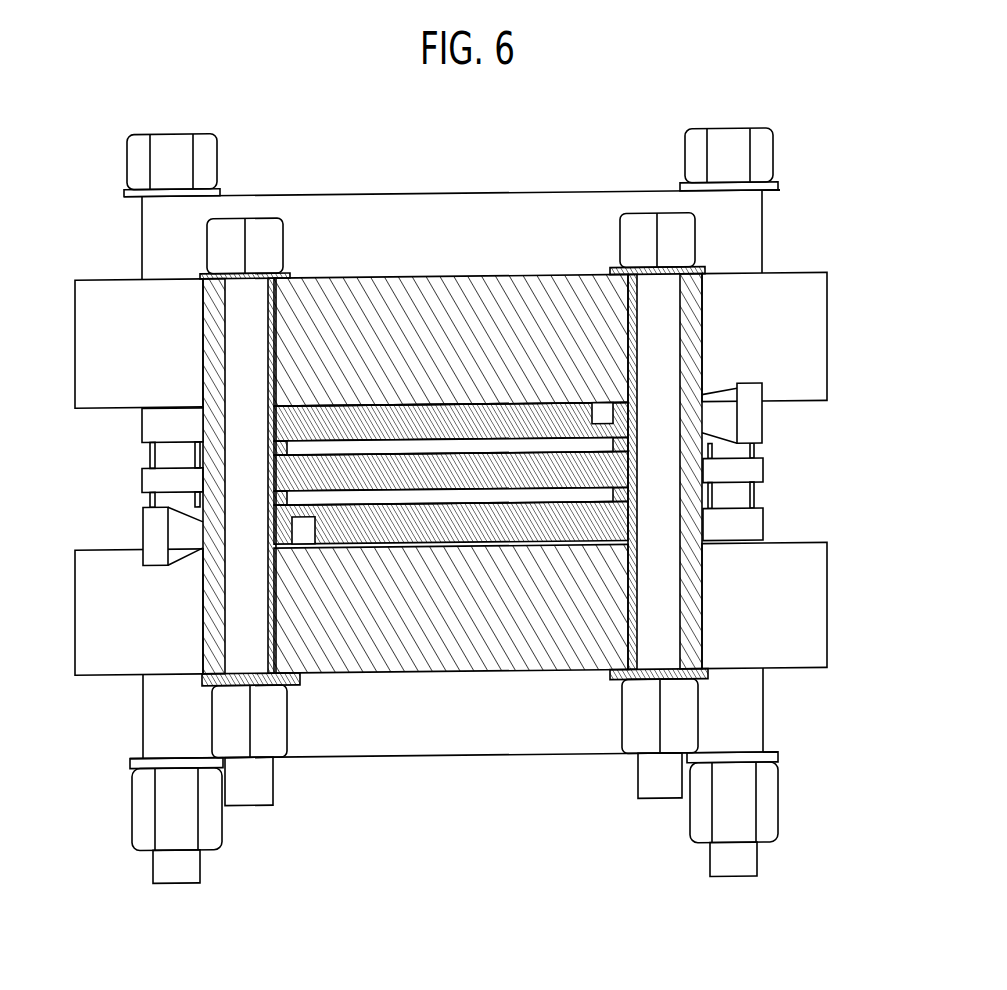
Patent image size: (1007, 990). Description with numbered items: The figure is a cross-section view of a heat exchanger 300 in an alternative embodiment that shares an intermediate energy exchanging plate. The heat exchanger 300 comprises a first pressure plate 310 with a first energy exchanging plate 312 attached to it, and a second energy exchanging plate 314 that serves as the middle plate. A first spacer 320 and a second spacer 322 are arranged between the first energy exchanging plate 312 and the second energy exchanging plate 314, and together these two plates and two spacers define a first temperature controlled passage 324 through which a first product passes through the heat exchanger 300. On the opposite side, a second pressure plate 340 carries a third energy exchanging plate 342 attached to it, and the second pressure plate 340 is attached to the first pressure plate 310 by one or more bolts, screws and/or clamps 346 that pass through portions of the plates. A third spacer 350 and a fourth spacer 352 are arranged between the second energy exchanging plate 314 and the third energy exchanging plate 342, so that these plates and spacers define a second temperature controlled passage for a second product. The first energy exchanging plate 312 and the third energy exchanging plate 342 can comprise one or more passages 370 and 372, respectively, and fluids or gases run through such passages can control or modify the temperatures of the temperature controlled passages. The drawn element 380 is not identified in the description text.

The heat exchanger 300 is at (626, 152).
The first pressure plate 310 is at (362, 300).
The first energy exchanging plate 312 is at (481, 407).
The second energy exchanging plate 314 is at (550, 470).
The first spacer 320 is at (288, 410).
The second spacer 322 is at (630, 415).
The first temperature controlled passage 324 is at (416, 425).
The second pressure plate 340 is at (520, 660).
The third energy exchanging plate 342 is at (467, 537).
The bolts, screws and/or clamps 346 is at (683, 245).
The third spacer 350 is at (293, 683).
The fourth spacer 352 is at (627, 560).
The passage 370 is at (755, 425).
The passage 372 is at (150, 534).
The spacer 380 is at (415, 504).